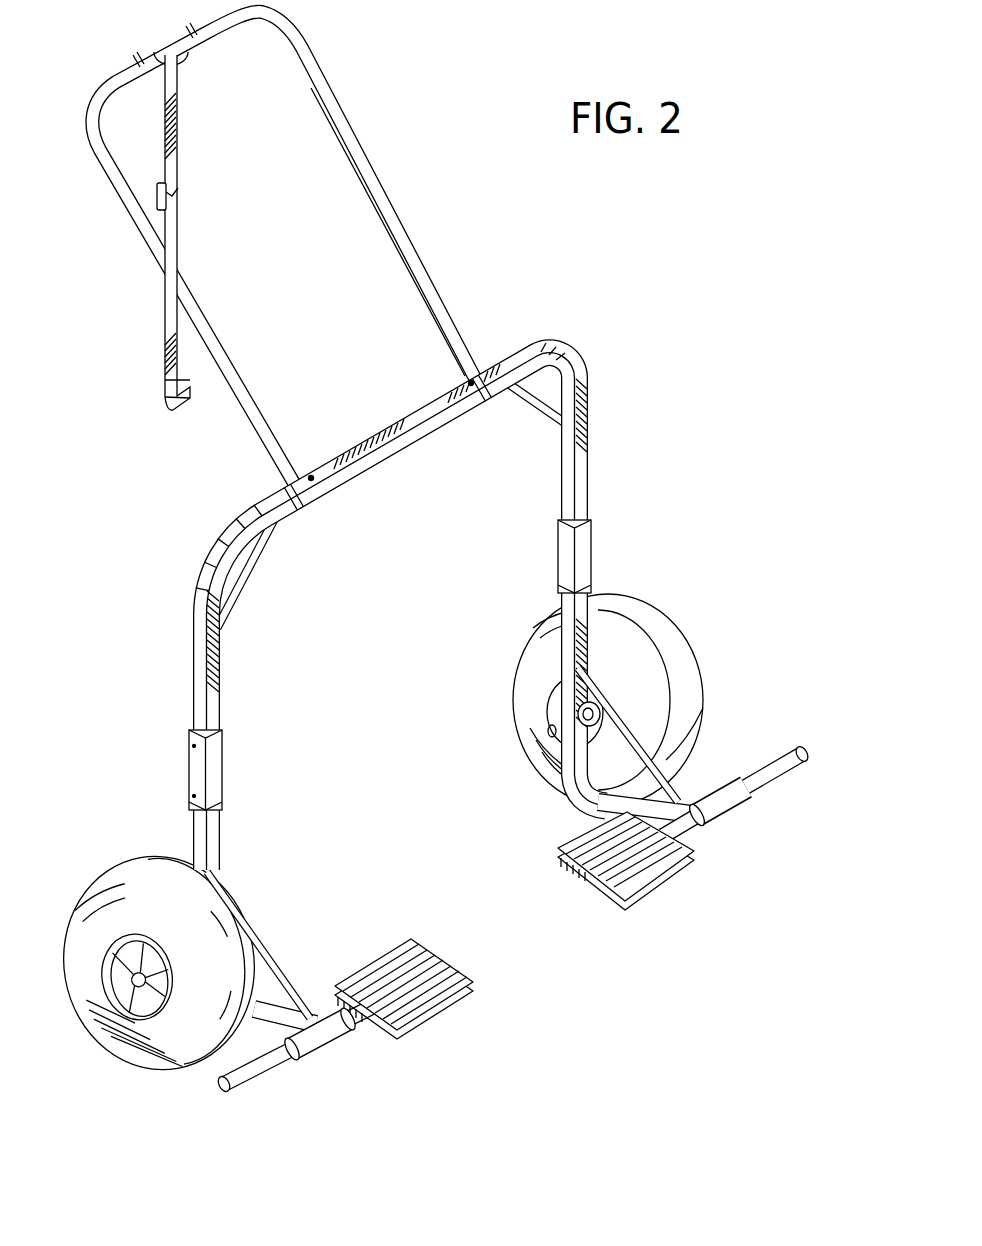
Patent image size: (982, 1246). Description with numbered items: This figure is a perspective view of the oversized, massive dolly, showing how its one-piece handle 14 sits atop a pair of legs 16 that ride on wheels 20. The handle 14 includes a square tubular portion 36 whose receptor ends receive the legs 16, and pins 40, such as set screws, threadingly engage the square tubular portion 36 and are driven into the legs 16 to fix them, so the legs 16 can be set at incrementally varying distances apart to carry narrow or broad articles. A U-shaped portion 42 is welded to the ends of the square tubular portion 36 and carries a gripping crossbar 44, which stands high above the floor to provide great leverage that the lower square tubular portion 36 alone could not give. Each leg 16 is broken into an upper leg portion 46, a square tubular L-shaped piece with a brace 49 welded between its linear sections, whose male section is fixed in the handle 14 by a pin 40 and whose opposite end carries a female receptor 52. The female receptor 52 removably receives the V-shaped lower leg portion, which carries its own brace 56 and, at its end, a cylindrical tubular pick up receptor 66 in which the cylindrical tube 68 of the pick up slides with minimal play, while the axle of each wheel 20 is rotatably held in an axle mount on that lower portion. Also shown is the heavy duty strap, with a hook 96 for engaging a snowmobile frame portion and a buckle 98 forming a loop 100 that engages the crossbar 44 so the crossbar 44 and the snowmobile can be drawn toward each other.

The handle 14 is at (433, 262).
The legs 16 is at (608, 533).
The wheels 20 is at (703, 672).
The square tubular portion 36 is at (393, 468).
The pins 40 is at (470, 381).
The U-shaped portion 42 is at (366, 158).
The crossbar 44 is at (137, 60).
The upper leg portion 46 is at (574, 362).
The brace 49 is at (540, 410).
The female receptor 52 is at (557, 560).
The brace 56 is at (615, 706).
The pick up receptor 66 is at (728, 812).
The cylindrical tube 68 is at (766, 762).
The hook 96 is at (162, 408).
The buckle 98 is at (180, 193).
The loop 100 is at (179, 106).